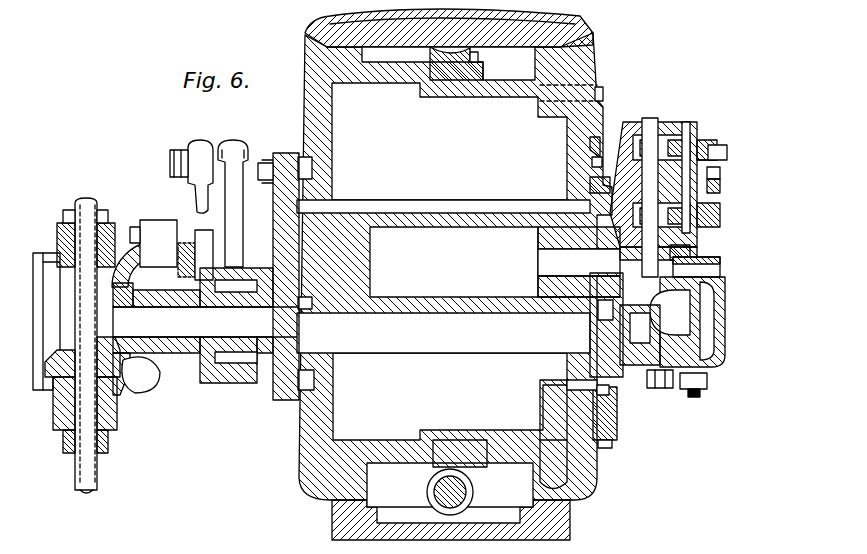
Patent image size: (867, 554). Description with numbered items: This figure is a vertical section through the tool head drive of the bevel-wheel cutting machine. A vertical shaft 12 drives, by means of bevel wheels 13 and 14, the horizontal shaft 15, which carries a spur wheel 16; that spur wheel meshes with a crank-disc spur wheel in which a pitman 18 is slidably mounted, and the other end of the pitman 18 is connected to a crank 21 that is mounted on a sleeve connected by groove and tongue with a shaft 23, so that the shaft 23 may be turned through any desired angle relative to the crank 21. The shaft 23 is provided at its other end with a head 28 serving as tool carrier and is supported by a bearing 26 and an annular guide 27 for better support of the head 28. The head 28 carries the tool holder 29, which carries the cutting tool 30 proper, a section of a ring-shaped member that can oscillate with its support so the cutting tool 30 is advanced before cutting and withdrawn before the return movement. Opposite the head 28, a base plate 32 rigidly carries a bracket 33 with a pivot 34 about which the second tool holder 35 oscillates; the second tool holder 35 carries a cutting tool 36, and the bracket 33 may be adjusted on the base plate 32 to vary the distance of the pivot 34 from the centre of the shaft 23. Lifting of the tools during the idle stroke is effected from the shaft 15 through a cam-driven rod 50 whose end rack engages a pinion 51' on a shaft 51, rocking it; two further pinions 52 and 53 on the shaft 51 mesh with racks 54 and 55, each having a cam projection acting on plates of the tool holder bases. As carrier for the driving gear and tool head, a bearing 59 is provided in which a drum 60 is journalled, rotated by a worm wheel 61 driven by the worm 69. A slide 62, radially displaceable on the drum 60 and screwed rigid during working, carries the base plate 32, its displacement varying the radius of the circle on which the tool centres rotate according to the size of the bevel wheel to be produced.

The vertical shaft 12 is at (98, 477).
The bevel wheel 13 is at (66, 353).
The bevel wheel 14 is at (110, 297).
The horizontal shaft 15 is at (178, 350).
The spur wheel 16 is at (238, 370).
The pitman 18 is at (190, 190).
The crank 21 is at (237, 140).
The shaft 23 is at (438, 287).
The bearing 26 is at (555, 297).
The annular guide 27 is at (595, 162).
The head 28 is at (678, 125).
The tool holder 29 is at (722, 185).
The cutting tool 30 is at (720, 170).
The base plate 32 is at (670, 388).
The bracket 33 is at (722, 352).
The pivot 34 is at (720, 268).
The second tool holder 35 is at (715, 152).
The cutting tool 36 is at (727, 153).
The rod 50 is at (579, 262).
The shaft 51 is at (666, 175).
The pinion 51' is at (718, 241).
The pinion 52 is at (592, 185).
The pinion 53 is at (628, 122).
The rack 54 is at (720, 212).
The rack 55 is at (700, 145).
The bearing 59 is at (592, 26).
The drum 60 is at (598, 50).
The worm wheel 61 is at (462, 50).
The slide 62 is at (590, 147).
The worm 69 is at (474, 489).